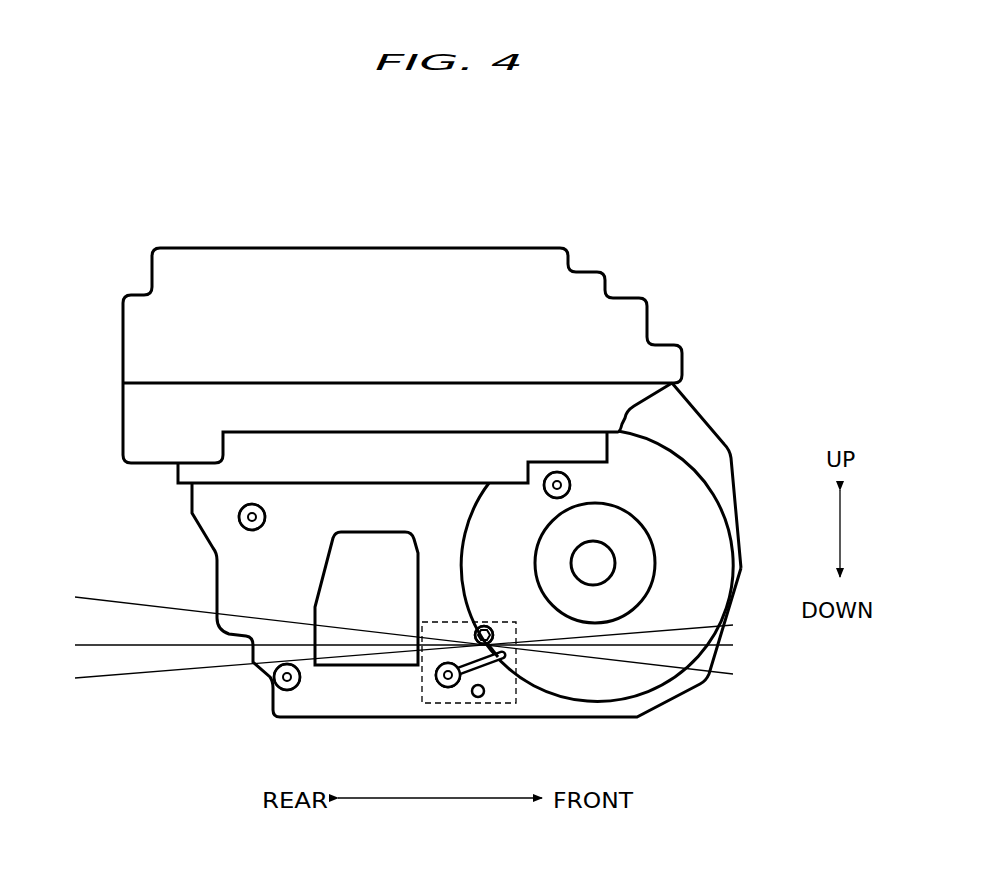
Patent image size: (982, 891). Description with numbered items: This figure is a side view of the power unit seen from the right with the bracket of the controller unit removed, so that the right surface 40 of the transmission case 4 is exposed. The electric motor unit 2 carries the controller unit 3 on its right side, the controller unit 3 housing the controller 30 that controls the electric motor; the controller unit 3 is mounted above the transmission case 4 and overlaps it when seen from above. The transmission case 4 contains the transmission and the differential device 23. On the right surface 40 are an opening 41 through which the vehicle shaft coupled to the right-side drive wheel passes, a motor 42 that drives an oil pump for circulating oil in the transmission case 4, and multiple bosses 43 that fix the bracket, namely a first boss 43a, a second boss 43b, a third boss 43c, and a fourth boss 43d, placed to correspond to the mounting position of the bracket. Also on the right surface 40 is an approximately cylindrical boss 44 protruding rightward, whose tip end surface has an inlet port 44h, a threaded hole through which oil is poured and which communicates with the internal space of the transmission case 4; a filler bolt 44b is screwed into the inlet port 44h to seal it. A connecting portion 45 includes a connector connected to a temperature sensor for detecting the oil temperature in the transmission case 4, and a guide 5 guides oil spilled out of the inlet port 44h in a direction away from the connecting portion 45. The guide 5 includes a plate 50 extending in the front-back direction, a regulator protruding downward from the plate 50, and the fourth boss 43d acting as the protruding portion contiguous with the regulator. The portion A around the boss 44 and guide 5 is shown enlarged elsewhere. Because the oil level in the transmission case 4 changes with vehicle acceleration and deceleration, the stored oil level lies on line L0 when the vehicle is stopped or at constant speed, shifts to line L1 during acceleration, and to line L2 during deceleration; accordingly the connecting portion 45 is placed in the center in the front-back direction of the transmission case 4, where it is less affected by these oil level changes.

The electric motor unit 2 is at (682, 417).
The controller unit 3 is at (520, 265).
The transmission case 4 is at (727, 441).
The differential device 23 is at (687, 505).
The controller 30 is at (365, 265).
The right surface 40 is at (235, 578).
The opening 41 is at (601, 583).
The motor 42 is at (327, 667).
The bosses 43 is at (404, 581).
The first boss 43a is at (557, 472).
The second boss 43b is at (239, 517).
The third boss 43c is at (274, 677).
The fourth boss 43d is at (438, 683).
The boss 44 is at (470, 632).
The filler bolt 44b is at (482, 627).
The inlet port 44h is at (522, 618).
The guide 5 is at (455, 697).
The connecting portion 45 is at (479, 697).
The plate 50 is at (490, 660).
The portion A is at (515, 685).
The line L0 is at (389, 645).
The line L1 is at (389, 629).
The line L2 is at (389, 659).